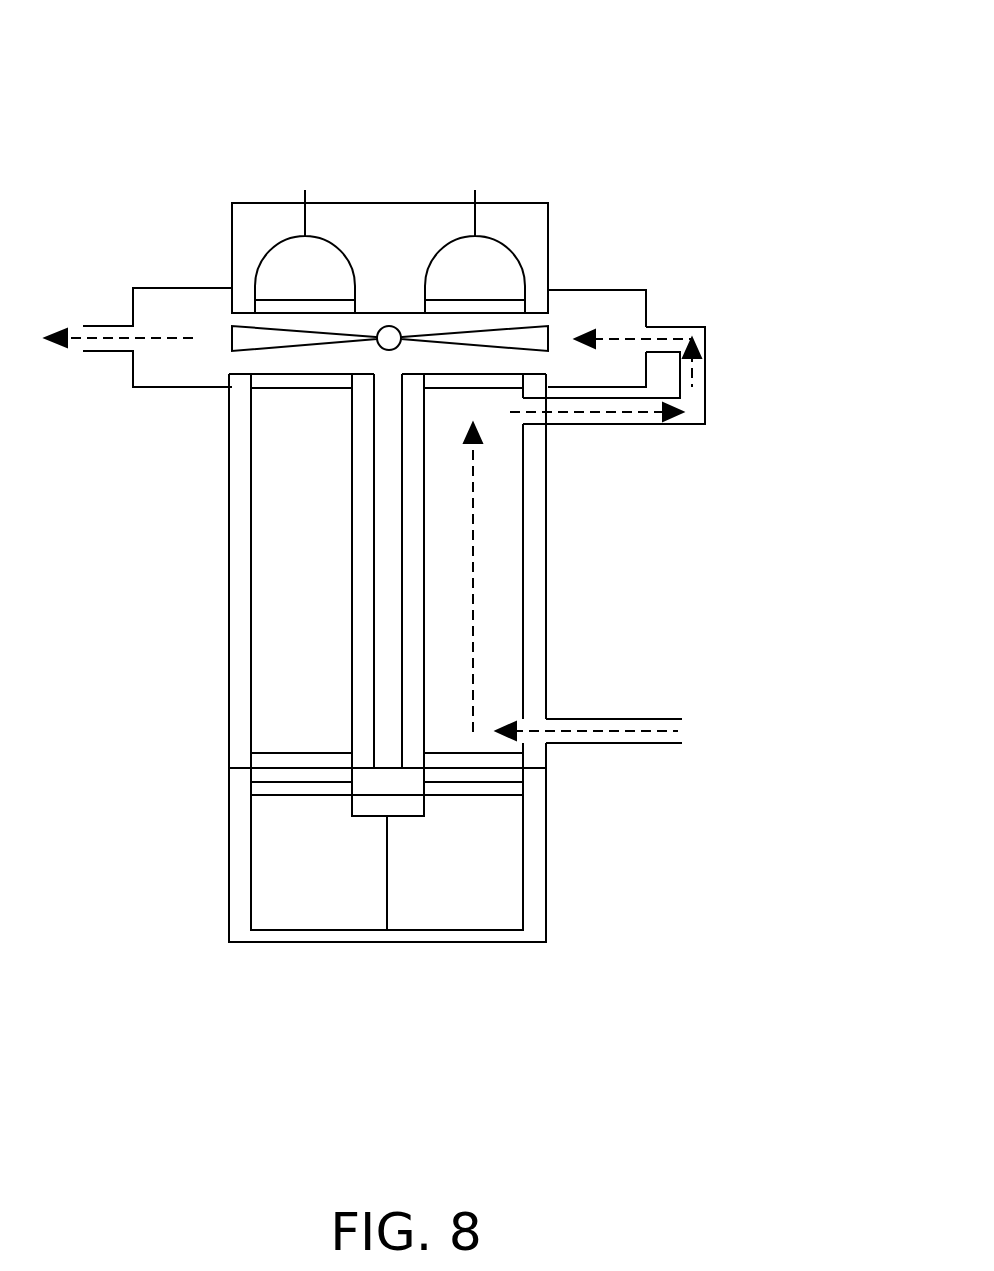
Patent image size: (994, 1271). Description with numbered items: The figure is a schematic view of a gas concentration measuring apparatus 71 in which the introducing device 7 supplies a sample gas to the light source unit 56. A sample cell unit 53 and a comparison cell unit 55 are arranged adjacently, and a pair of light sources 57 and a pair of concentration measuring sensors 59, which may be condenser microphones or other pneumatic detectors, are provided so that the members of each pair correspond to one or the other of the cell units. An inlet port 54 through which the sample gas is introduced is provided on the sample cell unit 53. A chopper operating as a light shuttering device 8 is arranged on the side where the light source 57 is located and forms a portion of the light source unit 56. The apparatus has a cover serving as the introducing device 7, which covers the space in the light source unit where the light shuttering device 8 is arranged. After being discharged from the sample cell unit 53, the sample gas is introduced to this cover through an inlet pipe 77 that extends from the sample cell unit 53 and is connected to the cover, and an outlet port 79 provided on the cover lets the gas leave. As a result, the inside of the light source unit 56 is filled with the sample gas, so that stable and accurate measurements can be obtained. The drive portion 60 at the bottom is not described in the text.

The introducing device 7 is at (597, 289).
The light shuttering device 8 is at (250, 337).
The sample cell unit 53 is at (500, 578).
The inlet port 54 is at (645, 717).
The comparison cell unit 55 is at (275, 600).
The light source unit 56 is at (392, 203).
The light source 57 is at (318, 258).
The concentration measuring sensor 59 is at (322, 907).
The drive assembly 60 is at (233, 974).
The gas concentration measuring apparatus 71 is at (572, 144).
The inlet pipe 77 is at (705, 403).
The outlet port 79 is at (107, 325).